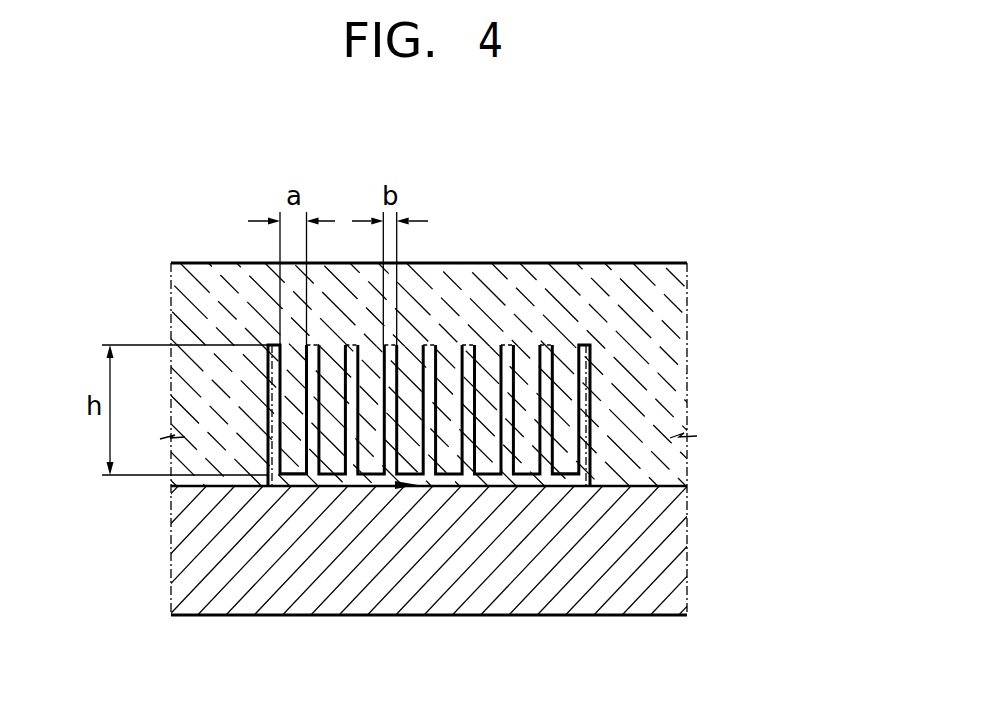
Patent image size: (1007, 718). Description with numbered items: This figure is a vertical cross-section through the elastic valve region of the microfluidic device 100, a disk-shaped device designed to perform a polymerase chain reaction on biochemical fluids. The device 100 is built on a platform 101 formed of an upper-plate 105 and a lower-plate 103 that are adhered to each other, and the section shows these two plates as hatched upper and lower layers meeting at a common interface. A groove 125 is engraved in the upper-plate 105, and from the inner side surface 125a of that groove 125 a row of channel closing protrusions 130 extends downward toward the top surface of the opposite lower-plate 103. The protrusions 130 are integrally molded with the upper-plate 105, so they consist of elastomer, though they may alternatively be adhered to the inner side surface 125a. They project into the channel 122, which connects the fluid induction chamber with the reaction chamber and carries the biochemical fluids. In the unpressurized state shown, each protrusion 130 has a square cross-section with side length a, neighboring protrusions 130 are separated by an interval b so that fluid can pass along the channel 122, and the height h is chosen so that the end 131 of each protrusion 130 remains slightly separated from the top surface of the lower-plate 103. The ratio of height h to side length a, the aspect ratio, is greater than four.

The microfluidic device 100 is at (128, 253).
The platform 101 is at (442, 439).
The lower-plate 103 is at (428, 550).
The upper-plate 105 is at (680, 401).
The channel 122 is at (400, 486).
The groove 125 is at (570, 347).
The inner side surface 125a is at (547, 347).
The channel closing protrusions 130 is at (488, 360).
The end 131 is at (563, 477).